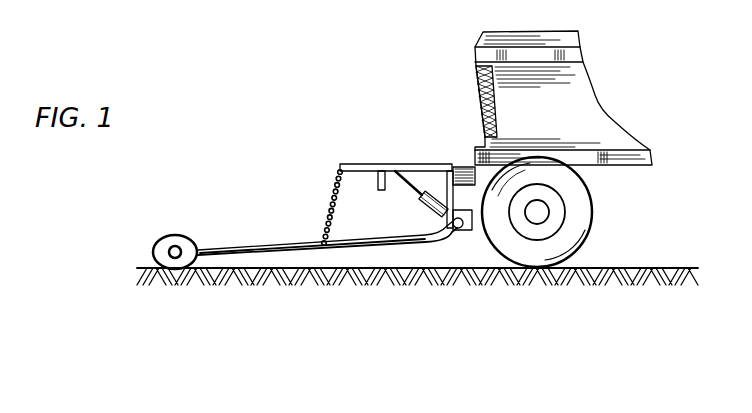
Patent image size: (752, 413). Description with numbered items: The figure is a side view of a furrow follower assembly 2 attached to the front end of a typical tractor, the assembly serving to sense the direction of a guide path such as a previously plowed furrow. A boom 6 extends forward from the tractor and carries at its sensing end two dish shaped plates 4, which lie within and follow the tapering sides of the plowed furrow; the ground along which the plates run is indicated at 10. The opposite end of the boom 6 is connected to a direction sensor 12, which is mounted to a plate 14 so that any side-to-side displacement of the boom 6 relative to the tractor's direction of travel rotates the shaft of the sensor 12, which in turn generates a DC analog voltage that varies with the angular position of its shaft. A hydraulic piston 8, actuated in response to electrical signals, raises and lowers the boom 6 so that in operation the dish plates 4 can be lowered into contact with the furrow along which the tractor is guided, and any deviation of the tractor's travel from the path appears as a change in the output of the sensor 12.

The furrow follower assembly 2 is at (269, 207).
The dish shaped plates 4 is at (154, 252).
The boom 6 is at (228, 247).
The hydraulic piston 8 is at (423, 205).
The ground surface 10 is at (452, 272).
The direction sensor 12 is at (473, 232).
The plate 14 is at (447, 190).